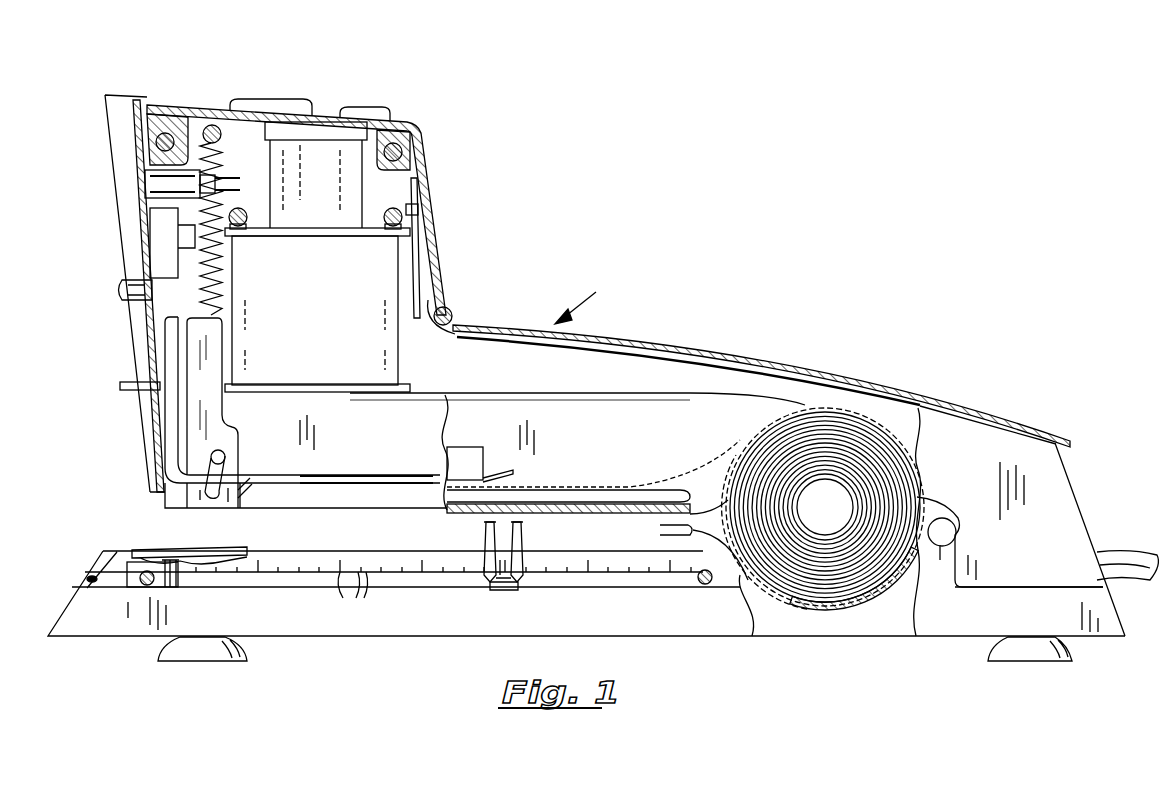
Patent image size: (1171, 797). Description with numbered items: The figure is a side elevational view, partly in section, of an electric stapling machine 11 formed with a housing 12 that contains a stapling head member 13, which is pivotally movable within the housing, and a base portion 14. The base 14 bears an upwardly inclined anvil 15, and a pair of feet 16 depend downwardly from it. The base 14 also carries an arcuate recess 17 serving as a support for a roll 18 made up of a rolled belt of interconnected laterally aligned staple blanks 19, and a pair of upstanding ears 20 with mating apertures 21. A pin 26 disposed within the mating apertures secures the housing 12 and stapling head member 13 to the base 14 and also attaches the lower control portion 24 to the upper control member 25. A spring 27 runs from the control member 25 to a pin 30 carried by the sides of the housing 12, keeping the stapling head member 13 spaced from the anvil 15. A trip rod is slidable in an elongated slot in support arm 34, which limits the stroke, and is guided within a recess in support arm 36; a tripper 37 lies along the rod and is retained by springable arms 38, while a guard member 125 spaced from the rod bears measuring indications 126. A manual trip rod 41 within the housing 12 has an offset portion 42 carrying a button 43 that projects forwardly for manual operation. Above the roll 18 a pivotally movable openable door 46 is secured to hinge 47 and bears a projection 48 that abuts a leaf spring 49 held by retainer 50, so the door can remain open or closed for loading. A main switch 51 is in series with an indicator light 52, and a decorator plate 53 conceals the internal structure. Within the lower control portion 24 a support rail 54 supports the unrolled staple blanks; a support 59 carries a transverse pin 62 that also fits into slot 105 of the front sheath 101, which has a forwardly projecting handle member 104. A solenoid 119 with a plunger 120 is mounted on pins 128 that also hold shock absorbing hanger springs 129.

The stapling machine 11 is at (587, 300).
The housing 12 is at (968, 436).
The stapling head member 13 is at (283, 497).
The base portion 14 is at (334, 625).
The anvil 15 is at (160, 548).
The feet 16 is at (210, 655).
The arcuate recess 17 is at (858, 610).
The roll of staple blanks 18 is at (820, 600).
The staple blanks 19 is at (648, 485).
The upstanding ears 20 is at (958, 530).
The mating apertures 21 is at (960, 525).
The lower control portion 24 is at (598, 510).
The upper control member 25 is at (612, 408).
The pin 26 is at (942, 546).
The spring 27 is at (222, 283).
The pin 30 is at (212, 124).
The support arm 34 is at (130, 587).
The support arm 36 is at (182, 586).
The tripper 37 is at (505, 590).
The springable arms 38 is at (484, 530).
The manual trip rod 41 is at (373, 483).
The offset portion 42 is at (178, 414).
The button 43 is at (122, 292).
The door 46 is at (700, 358).
The hinge 47 is at (452, 318).
The projection 48 is at (437, 298).
The leaf spring 49 is at (420, 266).
The retainer 50 is at (428, 207).
The main switch 51 is at (125, 246).
The indicator light 52 is at (145, 188).
The decorator plate 53 is at (140, 345).
The support rail 54 is at (558, 490).
The support 59 is at (480, 454).
The transverse pin 62 is at (222, 458).
The front sheath 101 is at (198, 500).
The handle member 104 is at (122, 386).
The slot 105 is at (225, 497).
The solenoid 119 is at (362, 313).
The plunger 120 is at (322, 200).
The guard member 125 is at (352, 556).
The measuring indications 126 is at (357, 599).
The pins 128 is at (240, 212).
The hanger springs 129 is at (440, 212).